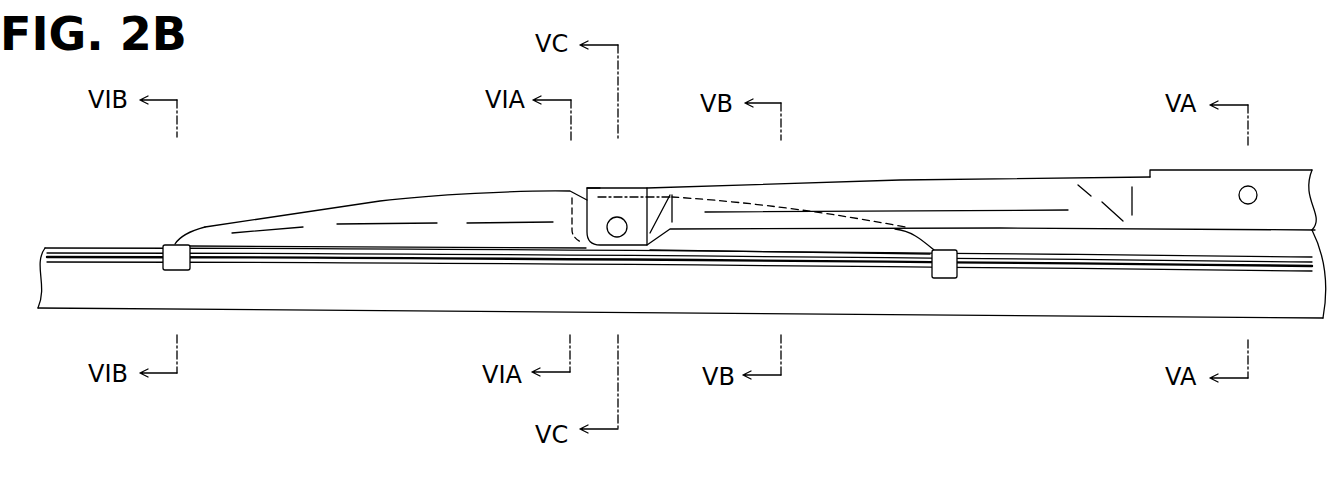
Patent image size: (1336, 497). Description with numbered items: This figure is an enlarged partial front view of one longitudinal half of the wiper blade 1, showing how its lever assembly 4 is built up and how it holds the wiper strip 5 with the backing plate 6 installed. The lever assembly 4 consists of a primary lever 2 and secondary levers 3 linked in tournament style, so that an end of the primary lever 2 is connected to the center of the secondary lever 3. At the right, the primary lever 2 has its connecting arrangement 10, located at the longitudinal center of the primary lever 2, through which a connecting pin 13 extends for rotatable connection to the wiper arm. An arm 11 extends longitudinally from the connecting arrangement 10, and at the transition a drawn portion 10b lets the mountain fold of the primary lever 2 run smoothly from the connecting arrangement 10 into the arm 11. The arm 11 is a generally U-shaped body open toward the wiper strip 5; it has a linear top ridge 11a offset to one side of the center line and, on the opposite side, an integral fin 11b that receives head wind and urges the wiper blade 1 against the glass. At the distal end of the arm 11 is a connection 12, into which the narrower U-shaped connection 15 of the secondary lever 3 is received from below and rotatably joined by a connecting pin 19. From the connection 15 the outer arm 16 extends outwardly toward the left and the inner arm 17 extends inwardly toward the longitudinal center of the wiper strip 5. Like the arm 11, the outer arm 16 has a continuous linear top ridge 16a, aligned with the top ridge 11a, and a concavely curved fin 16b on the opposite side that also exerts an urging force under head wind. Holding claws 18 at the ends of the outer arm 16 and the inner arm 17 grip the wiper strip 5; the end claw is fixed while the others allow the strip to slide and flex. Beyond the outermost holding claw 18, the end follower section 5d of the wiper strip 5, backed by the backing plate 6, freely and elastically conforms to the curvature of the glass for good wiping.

The wiper blade 1 is at (1057, 54).
The primary lever 2 is at (1051, 177).
The secondary lever 3 is at (478, 192).
The lever assembly 4 is at (707, 179).
The wiper strip 5 is at (310, 292).
The end follower section 5d is at (65, 290).
The backing plate 6 is at (136, 247).
The connecting arrangement 10 is at (1177, 180).
The drawn portion 10b is at (1118, 193).
The arm 11 is at (868, 186).
The top ridge 11a is at (950, 183).
The fin 11b is at (1010, 215).
The connection 12 is at (635, 187).
The connecting pin 13 is at (1258, 187).
The connection 15 is at (603, 188).
The outer arm 16 is at (402, 202).
The top ridge 16a is at (333, 207).
The fin 16b is at (412, 227).
The inner arm 17 is at (775, 240).
The holding claw 18 is at (180, 270).
The connecting pin 19 is at (619, 238).